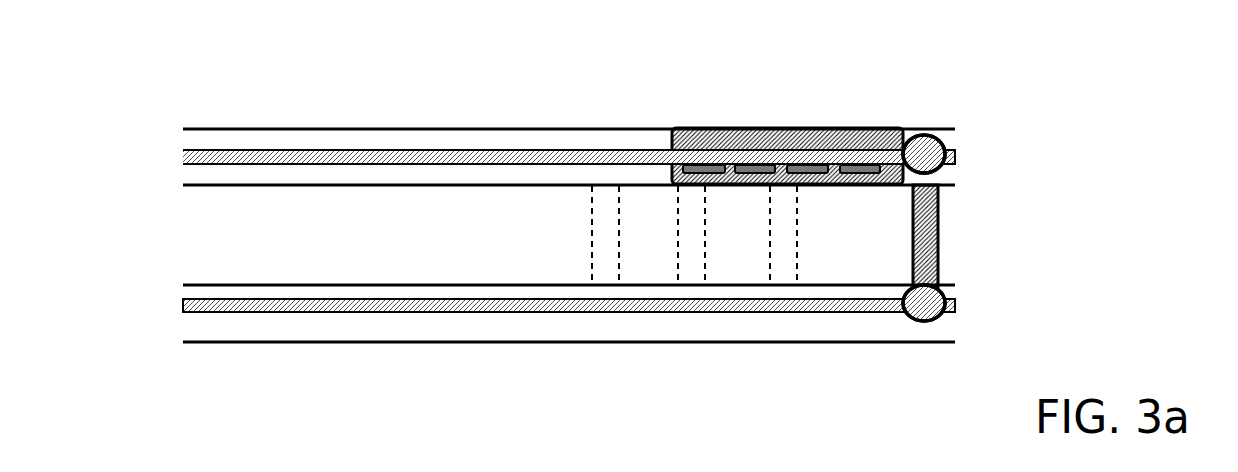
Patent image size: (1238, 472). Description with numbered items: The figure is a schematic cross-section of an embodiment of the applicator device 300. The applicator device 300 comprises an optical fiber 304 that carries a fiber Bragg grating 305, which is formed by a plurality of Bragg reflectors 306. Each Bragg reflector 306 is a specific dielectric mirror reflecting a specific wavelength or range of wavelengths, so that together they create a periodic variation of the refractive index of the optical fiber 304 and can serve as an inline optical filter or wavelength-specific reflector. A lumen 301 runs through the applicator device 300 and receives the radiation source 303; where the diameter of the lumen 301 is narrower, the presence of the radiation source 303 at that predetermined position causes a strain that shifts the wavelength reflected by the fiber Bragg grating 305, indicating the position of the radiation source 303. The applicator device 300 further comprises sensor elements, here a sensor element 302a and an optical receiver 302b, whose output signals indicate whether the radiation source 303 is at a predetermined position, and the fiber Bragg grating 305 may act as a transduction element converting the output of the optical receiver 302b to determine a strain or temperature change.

The applicator device 300 is at (134, 120).
The lumen 301 is at (531, 221).
The sensor element 302a is at (922, 152).
The optical receiver 302b is at (922, 322).
The radiation source 303 is at (926, 215).
The optical fiber 304 is at (425, 155).
The fiber Bragg grating 305 is at (793, 126).
The Bragg reflector 306 is at (693, 168).